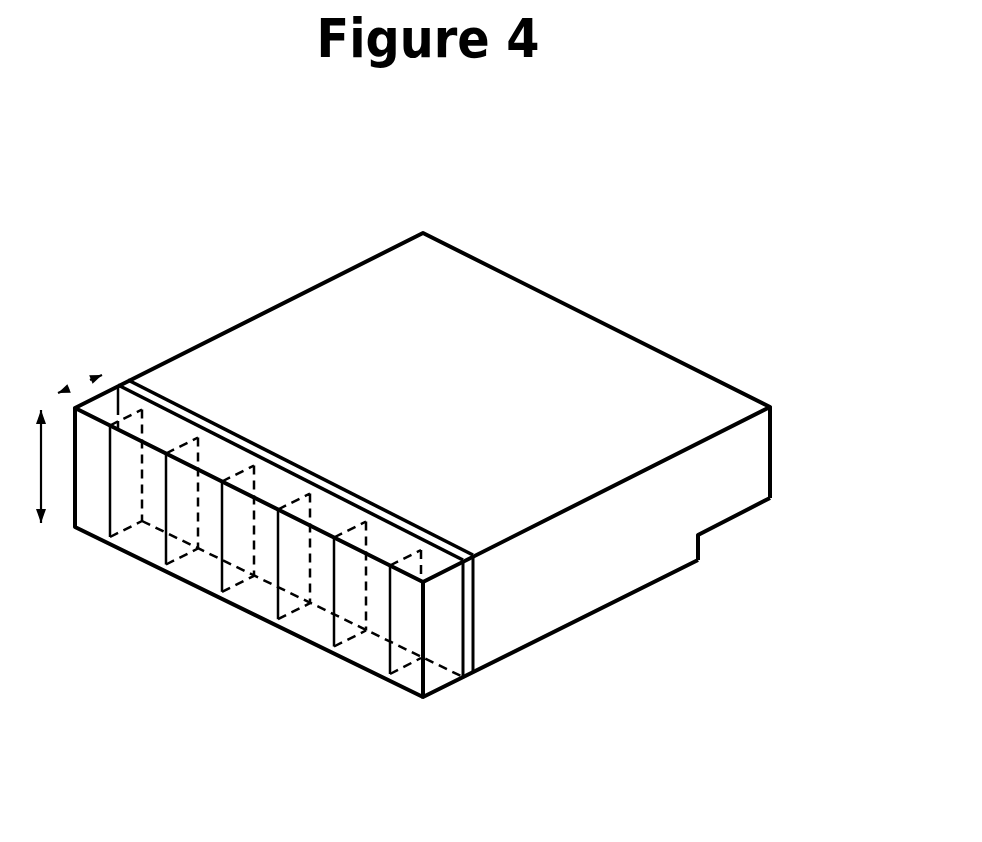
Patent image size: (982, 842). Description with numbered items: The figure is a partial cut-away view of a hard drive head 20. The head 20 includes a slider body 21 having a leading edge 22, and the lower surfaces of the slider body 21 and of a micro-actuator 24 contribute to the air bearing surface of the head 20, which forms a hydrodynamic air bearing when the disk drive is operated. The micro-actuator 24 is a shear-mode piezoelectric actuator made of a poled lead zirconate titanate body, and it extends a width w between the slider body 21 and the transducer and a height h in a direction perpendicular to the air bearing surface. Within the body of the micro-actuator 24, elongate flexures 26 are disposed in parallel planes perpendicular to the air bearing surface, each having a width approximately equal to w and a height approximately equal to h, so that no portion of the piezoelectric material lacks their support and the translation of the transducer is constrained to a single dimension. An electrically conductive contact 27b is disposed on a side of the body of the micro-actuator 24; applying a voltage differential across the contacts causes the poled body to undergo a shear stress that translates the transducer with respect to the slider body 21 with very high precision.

The head 20 is at (660, 265).
The slider body 21 is at (683, 410).
The leading edge 22 is at (723, 545).
The micro-actuator 24 is at (437, 680).
The elongate flexures 26 is at (390, 659).
The electrically conductive contact 27b is at (376, 512).